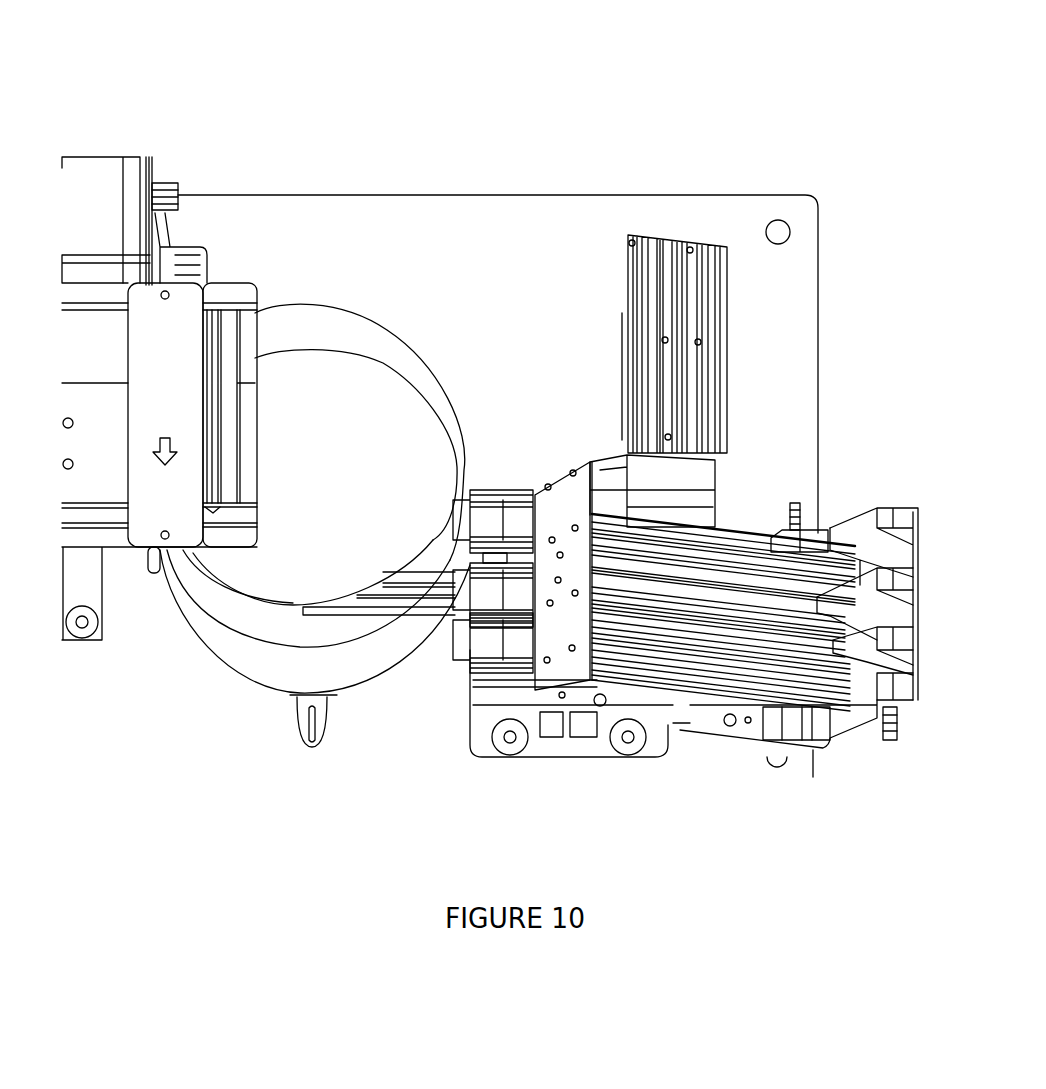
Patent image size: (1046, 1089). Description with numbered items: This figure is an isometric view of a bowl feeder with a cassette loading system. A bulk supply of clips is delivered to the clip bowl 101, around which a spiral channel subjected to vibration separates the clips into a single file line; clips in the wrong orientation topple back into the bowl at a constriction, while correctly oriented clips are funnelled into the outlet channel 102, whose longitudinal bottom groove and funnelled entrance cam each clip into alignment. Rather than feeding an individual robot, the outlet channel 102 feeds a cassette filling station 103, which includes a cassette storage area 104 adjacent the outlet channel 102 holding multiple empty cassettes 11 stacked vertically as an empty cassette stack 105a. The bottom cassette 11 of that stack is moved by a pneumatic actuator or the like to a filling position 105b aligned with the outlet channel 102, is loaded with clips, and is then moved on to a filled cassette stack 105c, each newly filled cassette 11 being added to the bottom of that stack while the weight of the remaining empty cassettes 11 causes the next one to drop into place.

The clip bowl 101 is at (332, 425).
The outlet channel 102 is at (417, 592).
The cassette filling station 103 is at (731, 505).
The cassette storage area 104 is at (833, 512).
The empty cassette stack 105a is at (642, 538).
The filling position 105b is at (632, 607).
The filled cassette stack 105c is at (635, 653).
The cassette 11 is at (653, 640).